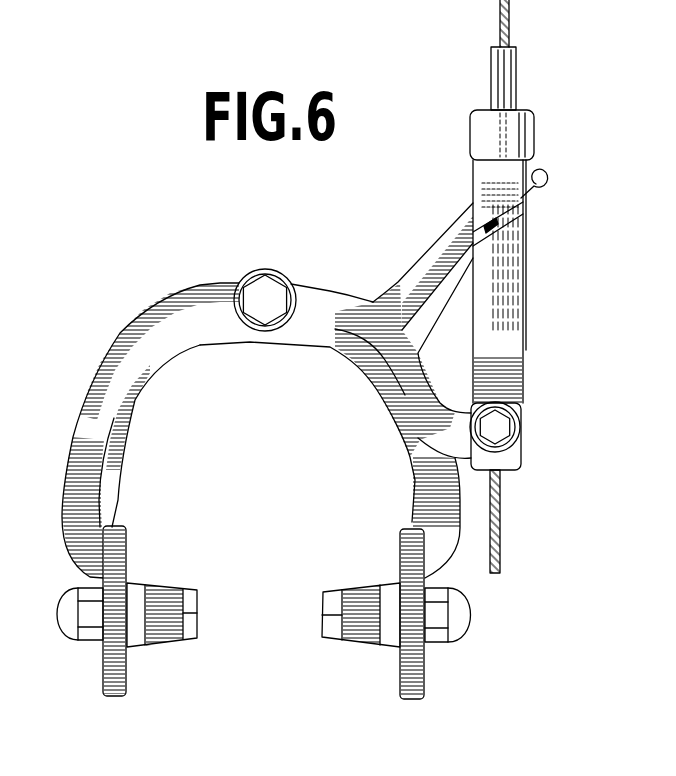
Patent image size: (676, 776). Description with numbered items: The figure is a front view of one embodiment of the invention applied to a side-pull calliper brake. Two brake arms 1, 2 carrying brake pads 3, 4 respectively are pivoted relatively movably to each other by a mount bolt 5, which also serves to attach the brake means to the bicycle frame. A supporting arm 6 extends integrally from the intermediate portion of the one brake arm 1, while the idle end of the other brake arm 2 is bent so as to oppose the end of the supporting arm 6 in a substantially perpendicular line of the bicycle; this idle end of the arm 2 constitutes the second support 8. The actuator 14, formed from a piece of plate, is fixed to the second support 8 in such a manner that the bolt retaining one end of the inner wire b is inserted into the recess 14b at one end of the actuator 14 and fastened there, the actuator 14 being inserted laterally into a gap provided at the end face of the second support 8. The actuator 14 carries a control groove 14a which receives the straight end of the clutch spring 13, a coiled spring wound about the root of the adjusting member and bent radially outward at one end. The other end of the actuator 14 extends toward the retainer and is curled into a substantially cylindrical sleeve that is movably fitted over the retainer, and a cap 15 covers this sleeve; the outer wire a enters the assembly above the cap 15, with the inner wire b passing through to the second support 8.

The brake arm 1 is at (450, 540).
The brake arm 2 is at (410, 412).
The brake pad 3 is at (362, 597).
The brake pad 4 is at (167, 597).
The mount bolt 5 is at (271, 290).
The supporting arm 6 is at (418, 252).
The second support 8 is at (490, 476).
The clutch spring 13 is at (546, 180).
The actuator 14 is at (520, 293).
The control groove 14a is at (517, 212).
The recess 14b is at (520, 425).
The cap 15 is at (537, 133).
The outer wire a is at (512, 77).
The inner wire b is at (510, 23).